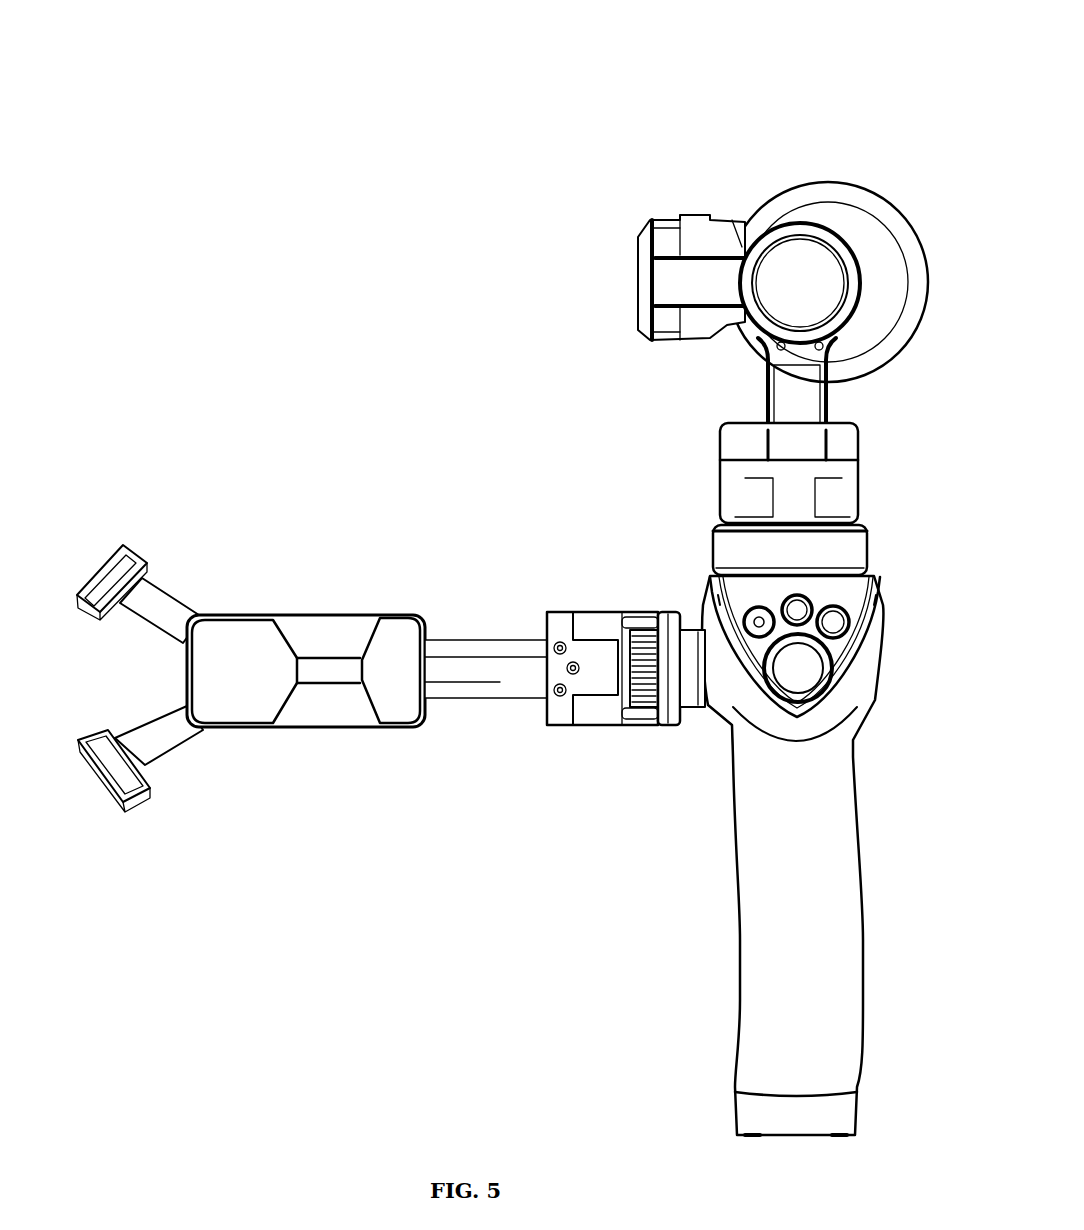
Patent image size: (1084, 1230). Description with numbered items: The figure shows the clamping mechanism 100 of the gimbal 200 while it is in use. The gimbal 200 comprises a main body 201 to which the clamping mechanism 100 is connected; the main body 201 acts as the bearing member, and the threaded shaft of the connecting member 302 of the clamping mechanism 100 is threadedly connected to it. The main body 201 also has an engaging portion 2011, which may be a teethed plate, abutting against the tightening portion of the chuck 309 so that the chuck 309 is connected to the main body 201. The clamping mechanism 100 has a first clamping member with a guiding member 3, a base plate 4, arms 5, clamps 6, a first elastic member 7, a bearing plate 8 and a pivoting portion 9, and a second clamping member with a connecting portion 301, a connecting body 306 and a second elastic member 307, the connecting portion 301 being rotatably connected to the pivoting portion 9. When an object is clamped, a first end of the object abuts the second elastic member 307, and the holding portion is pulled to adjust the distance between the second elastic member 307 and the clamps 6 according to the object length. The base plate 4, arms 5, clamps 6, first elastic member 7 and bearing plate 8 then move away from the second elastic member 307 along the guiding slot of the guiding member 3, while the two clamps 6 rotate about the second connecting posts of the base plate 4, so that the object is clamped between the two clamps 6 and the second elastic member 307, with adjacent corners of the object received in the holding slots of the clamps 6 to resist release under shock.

The gimbal 200 is at (410, 36).
The main body 201 is at (827, 850).
The engaging portion 2011 is at (660, 793).
The clamping mechanism 100 is at (437, 598).
The guiding member 3 is at (473, 650).
The base plate 4 is at (328, 715).
The arm 5 is at (157, 607).
The clamp 6 is at (140, 542).
The first elastic member 7 is at (398, 633).
The bearing plate 8 is at (333, 667).
The pivoting portion 9 is at (562, 712).
The connecting portion 301 is at (595, 623).
The connecting member 302 is at (637, 627).
The connecting body 306 is at (668, 720).
The second elastic member 307 is at (642, 715).
The chuck 309 is at (717, 700).